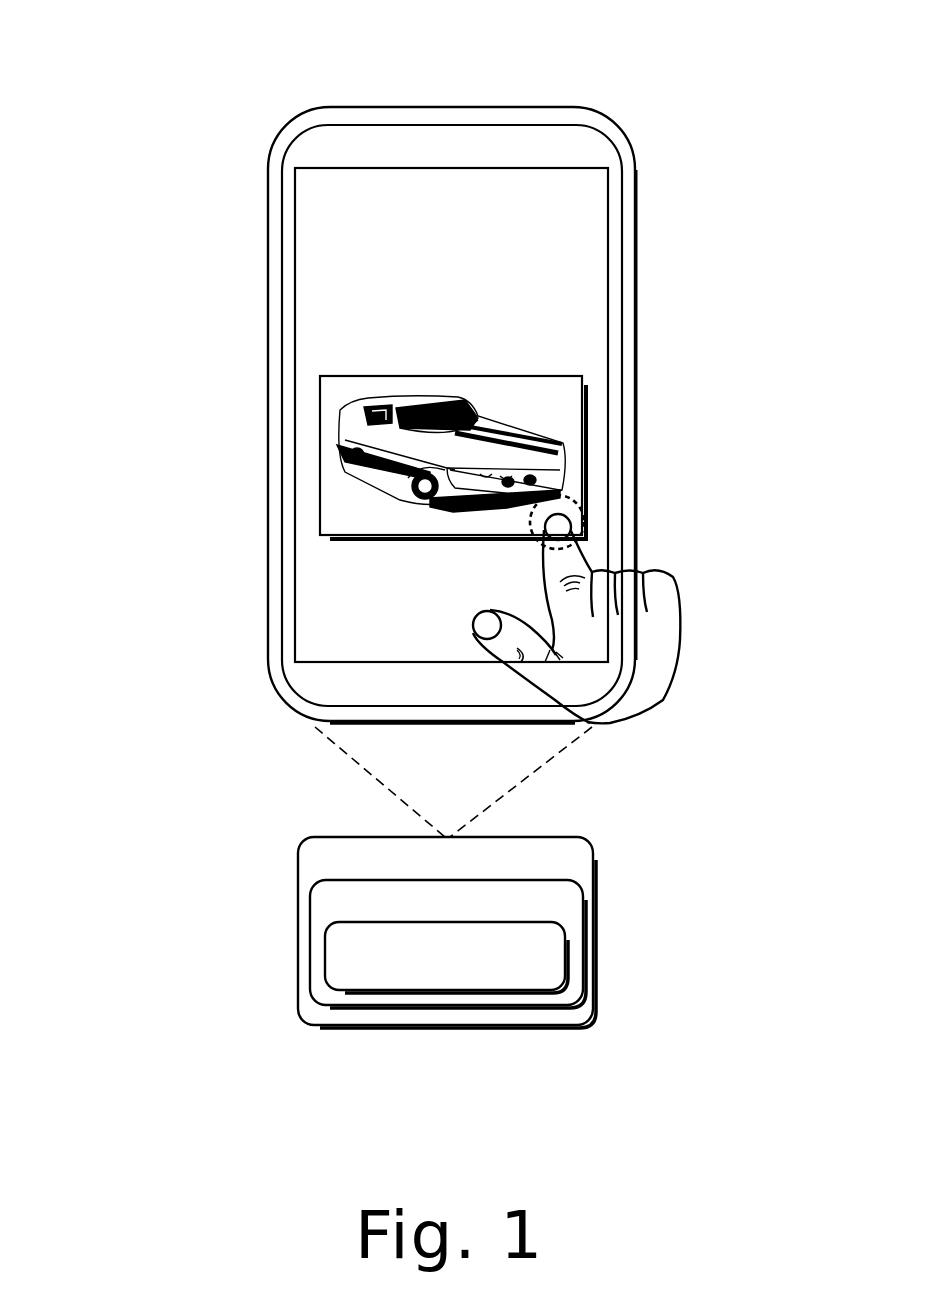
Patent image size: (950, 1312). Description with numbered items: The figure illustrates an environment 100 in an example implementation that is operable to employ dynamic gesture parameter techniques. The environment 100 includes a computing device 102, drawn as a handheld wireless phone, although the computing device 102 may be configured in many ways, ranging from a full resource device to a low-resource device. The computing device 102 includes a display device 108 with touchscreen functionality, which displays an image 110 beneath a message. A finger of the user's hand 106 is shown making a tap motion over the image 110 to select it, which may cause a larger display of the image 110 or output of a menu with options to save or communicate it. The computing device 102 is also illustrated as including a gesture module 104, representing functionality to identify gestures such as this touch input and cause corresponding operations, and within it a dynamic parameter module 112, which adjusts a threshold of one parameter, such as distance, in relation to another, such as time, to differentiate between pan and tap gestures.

The environment 100 is at (150, 68).
The computing device 102 is at (452, 567).
The gesture module 104 is at (448, 944).
The user's hand 106 is at (576, 609).
The display device 108 is at (451, 415).
The image 110 is at (453, 457).
The dynamic parameter module 112 is at (446, 957).